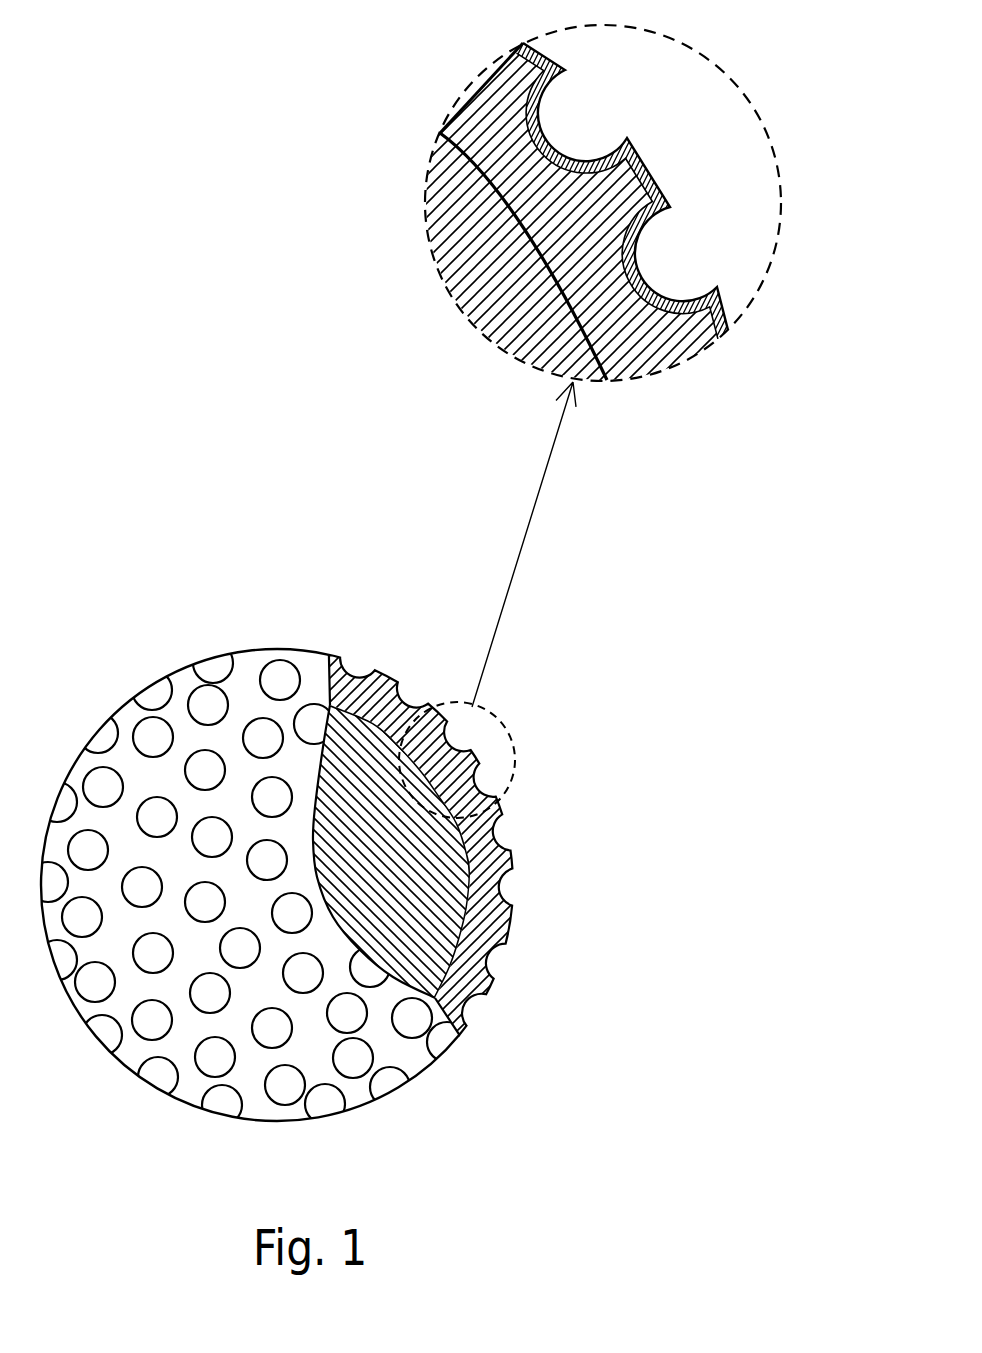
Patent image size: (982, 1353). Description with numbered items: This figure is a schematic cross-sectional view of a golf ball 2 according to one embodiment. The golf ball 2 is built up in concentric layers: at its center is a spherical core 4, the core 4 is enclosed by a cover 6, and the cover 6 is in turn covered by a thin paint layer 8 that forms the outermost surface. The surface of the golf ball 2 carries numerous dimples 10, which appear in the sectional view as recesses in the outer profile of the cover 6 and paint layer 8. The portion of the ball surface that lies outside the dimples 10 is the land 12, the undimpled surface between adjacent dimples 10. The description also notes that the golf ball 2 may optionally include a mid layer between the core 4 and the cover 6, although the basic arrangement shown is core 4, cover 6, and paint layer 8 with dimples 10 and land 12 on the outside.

The golf ball 2 is at (342, 600).
The core 4 is at (400, 880).
The cover 6 is at (470, 756).
The paint layer 8 is at (648, 167).
The dimples 10 is at (145, 737).
The land 12 is at (243, 690).